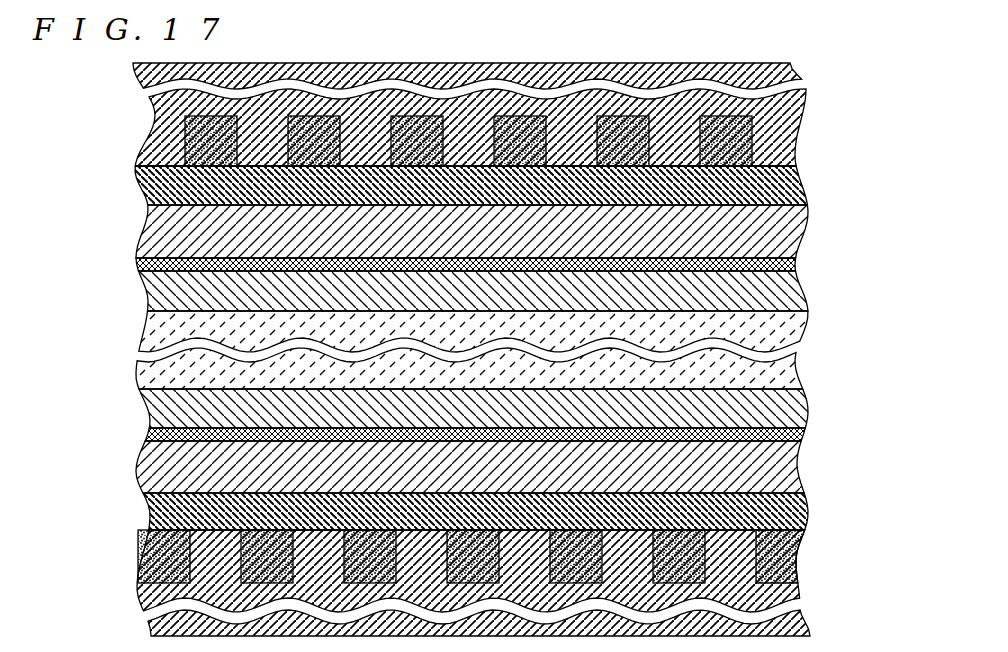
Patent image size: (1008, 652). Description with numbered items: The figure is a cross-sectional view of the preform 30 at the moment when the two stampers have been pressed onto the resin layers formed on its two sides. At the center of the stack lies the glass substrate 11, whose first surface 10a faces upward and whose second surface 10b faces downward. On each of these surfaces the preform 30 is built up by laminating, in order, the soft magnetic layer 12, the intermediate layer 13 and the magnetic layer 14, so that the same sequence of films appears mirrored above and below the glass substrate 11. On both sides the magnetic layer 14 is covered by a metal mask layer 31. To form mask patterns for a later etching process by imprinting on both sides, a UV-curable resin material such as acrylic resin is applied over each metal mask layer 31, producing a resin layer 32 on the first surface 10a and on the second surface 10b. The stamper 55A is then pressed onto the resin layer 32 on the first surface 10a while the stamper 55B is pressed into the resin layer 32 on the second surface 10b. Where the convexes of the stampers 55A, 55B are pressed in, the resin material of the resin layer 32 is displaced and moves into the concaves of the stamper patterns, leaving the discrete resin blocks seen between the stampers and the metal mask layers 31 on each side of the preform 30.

The first surface 10a is at (125, 157).
The second surface 10b is at (140, 526).
The glass substrate 11 is at (790, 357).
The soft magnetic layer 12 is at (792, 290).
The intermediate layer 13 is at (785, 253).
The magnetic layer 14 is at (797, 225).
The preform 30 is at (476, 350).
The metal mask layer 31 is at (782, 173).
The resin layer 32 is at (758, 129).
The stamper 55A is at (800, 105).
The stamper 55B is at (785, 587).